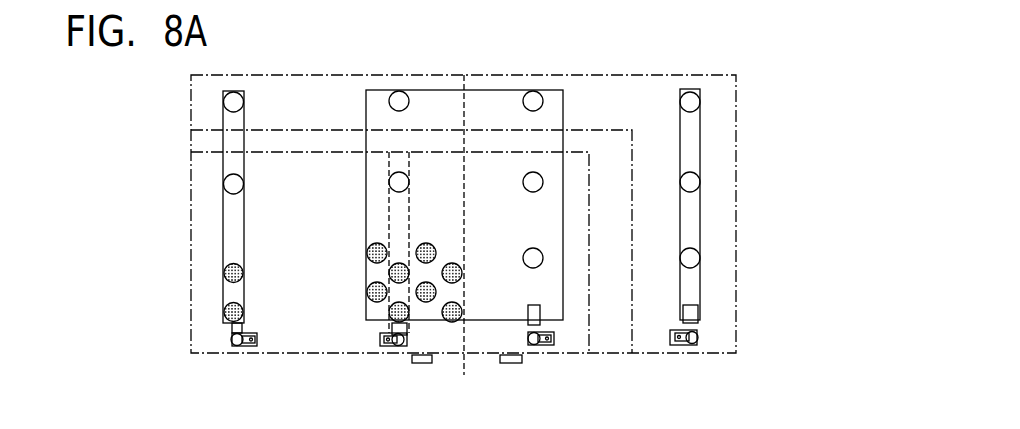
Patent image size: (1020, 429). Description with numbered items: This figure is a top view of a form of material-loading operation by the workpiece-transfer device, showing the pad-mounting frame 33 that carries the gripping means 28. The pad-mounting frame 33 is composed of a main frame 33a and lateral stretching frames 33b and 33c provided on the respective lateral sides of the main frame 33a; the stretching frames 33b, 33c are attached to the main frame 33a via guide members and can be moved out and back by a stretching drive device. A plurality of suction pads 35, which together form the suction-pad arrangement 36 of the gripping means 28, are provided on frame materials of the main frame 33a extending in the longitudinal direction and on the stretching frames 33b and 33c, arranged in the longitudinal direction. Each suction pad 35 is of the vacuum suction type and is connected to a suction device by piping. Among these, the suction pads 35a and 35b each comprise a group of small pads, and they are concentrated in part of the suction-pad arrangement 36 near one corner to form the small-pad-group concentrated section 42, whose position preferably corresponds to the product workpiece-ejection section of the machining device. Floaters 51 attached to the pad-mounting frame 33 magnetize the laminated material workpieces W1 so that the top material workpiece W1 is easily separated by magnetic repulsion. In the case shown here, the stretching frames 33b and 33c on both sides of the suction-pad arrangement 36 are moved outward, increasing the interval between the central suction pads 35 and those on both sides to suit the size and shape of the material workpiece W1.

The gripping means 28 is at (706, 100).
The pad-mounting frame 33 is at (431, 84).
The main frame 33a is at (487, 112).
The stretching frame 33b is at (232, 213).
The stretching frame 33c is at (695, 213).
The suction pad 35 is at (700, 335).
The suction pad 35a is at (232, 268).
The suction pad 35b is at (228, 315).
The suction-pad arrangement 36 is at (697, 168).
The small-pad-group concentrated section 42 is at (376, 310).
The floater 51 is at (510, 364).
The material workpiece W1 is at (589, 152).